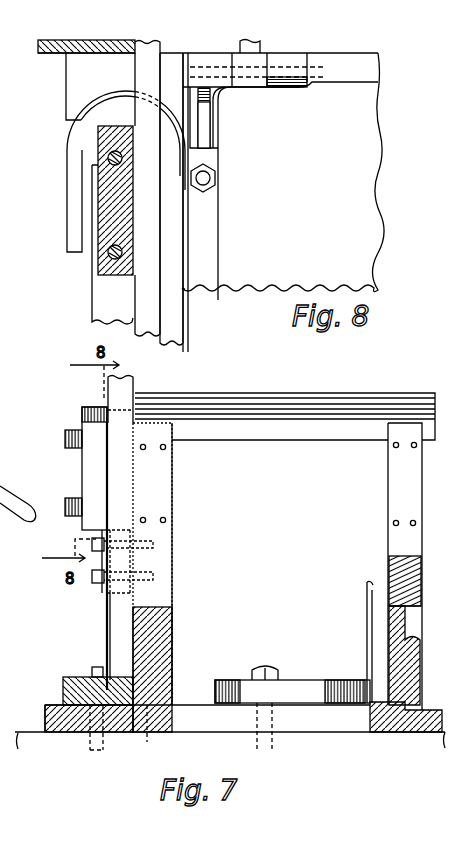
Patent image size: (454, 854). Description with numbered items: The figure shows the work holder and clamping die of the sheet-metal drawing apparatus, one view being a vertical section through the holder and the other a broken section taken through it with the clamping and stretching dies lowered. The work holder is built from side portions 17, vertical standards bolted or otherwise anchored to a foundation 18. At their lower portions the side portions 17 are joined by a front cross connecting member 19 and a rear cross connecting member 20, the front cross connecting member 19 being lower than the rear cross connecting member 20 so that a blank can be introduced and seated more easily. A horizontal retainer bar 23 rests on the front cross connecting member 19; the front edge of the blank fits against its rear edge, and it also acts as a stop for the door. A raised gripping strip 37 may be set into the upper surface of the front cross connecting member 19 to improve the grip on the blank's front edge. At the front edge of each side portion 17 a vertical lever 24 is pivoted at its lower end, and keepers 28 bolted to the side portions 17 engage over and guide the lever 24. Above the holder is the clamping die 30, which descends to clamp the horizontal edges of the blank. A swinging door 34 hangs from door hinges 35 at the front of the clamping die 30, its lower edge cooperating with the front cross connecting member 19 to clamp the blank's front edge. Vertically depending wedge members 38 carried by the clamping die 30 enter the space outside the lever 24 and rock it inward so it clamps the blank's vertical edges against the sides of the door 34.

In FIG. 8, the side portions 17 is at (92, 316).
In FIG. 7, the side portions 17 is at (288, 562).
In FIG. 7, the foundation 18 is at (32, 730).
In FIG. 7, the front cross connecting member 19 is at (170, 690).
In FIG. 7, the rear cross connecting member 20 is at (383, 640).
In FIG. 7, the horizontal retainer bar 23 is at (70, 679).
In FIG. 8, the vertical lever 24 is at (175, 254).
In FIG. 7, the vertical lever 24 is at (123, 488).
In FIG. 7, the keepers 28 is at (88, 465).
In FIG. 8, the clamping die 30 is at (48, 54).
In FIG. 8, the swinging door 34 is at (375, 206).
In FIG. 8, the door hinges 35 is at (296, 90).
In FIG. 7, the raised gripping strip 37 is at (133, 738).
In FIG. 8, the wedge members 38 is at (136, 299).
In FIG. 7, the wedge members 38 is at (130, 378).